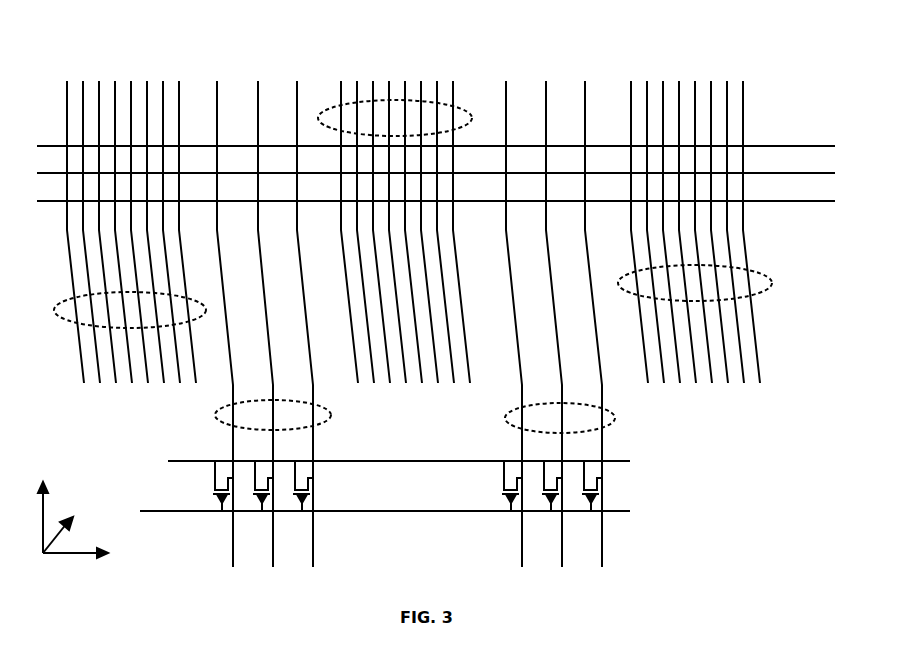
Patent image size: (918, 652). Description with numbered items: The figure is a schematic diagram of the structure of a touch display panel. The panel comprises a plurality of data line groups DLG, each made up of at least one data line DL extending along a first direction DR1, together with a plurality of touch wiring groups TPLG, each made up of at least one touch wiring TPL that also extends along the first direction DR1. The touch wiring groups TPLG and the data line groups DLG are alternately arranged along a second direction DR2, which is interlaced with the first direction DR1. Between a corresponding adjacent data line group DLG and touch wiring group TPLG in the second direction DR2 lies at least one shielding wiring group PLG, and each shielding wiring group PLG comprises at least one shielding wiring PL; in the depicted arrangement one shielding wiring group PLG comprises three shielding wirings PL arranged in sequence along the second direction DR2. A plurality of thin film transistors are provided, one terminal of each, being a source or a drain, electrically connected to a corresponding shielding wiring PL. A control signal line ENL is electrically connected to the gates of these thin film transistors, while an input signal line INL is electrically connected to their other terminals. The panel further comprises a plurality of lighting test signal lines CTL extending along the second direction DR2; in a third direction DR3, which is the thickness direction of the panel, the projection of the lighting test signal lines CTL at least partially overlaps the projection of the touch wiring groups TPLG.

The data line DL is at (131, 81).
The shielding wiring PL is at (546, 81).
The touch wiring TPL is at (436, 81).
The lighting test signal line CTL is at (751, 145).
The data line group DLG is at (54, 307).
The shielding wiring group PLG is at (331, 415).
The touch wiring group TPLG is at (325, 110).
The input signal line INL is at (630, 461).
The control signal line ENL is at (630, 511).
The first direction DR1 is at (58, 508).
The second direction DR2 is at (97, 552).
The third direction DR3 is at (73, 525).